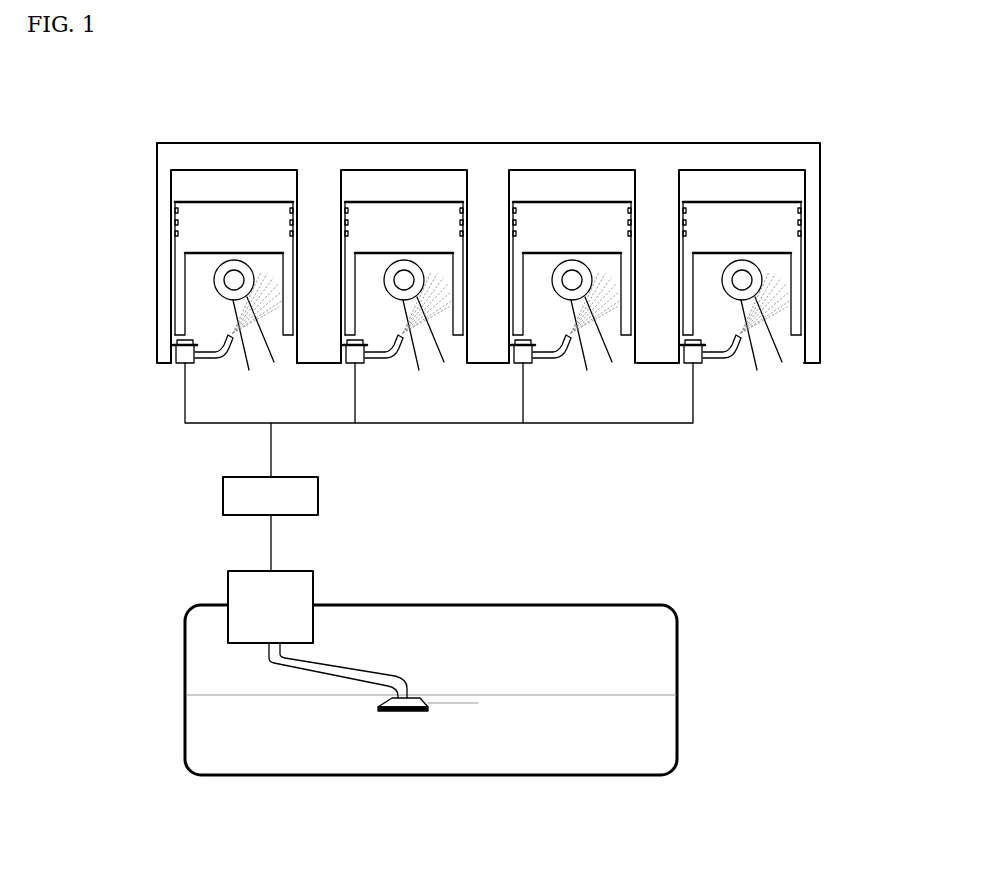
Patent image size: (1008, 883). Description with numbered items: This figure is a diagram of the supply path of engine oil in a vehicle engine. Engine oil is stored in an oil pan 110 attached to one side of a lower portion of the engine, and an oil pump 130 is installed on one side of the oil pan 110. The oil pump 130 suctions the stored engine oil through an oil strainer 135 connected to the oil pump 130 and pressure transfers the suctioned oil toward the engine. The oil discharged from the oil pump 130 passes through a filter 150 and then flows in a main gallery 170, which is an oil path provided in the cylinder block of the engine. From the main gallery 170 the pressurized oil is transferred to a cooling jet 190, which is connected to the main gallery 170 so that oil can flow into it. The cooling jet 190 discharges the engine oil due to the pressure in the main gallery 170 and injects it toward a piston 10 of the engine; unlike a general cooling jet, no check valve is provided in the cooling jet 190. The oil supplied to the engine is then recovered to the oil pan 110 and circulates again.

The piston 10 is at (790, 220).
The oil pan 110 is at (568, 605).
The oil pump 130 is at (228, 583).
The oil strainer 135 is at (415, 697).
The filter 150 is at (223, 490).
The main gallery 170 is at (453, 424).
The cooling jet 190 is at (731, 378).